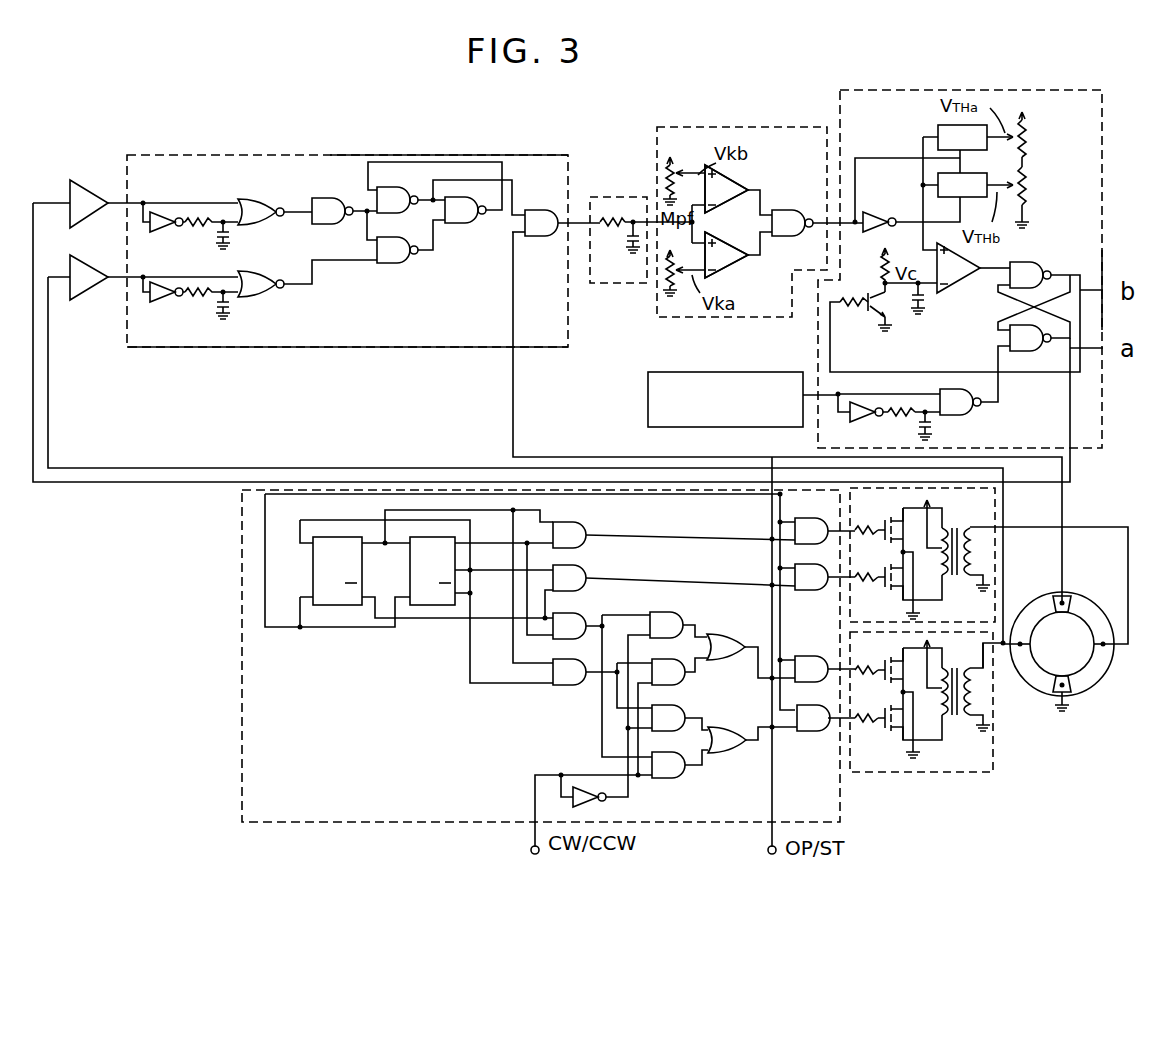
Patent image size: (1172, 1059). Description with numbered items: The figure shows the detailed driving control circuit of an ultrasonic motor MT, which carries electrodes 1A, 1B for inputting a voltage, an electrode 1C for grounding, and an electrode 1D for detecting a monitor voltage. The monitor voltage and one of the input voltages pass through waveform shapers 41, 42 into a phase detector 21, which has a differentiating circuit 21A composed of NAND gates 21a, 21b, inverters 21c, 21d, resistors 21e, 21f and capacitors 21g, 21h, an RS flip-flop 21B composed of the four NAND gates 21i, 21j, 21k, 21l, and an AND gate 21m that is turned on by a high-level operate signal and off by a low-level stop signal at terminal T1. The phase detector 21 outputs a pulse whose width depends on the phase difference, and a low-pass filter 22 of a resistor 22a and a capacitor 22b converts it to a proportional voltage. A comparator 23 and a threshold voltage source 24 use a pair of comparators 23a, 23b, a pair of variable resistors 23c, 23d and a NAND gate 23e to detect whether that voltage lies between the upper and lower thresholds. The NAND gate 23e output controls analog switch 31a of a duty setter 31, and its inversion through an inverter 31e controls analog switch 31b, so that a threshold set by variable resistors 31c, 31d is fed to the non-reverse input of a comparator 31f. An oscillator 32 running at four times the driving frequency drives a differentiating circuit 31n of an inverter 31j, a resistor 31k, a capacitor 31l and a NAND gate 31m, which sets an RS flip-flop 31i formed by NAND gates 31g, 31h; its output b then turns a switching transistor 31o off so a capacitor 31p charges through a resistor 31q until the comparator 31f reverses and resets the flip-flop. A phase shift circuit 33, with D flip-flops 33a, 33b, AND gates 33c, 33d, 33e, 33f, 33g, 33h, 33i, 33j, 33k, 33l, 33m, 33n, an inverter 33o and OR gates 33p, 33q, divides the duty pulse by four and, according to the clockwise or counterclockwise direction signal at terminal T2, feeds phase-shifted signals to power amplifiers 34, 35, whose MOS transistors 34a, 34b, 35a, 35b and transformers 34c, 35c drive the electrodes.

The waveform shaper 41 is at (97, 180).
The waveform shaper 42 is at (88, 301).
The phase detector 21 is at (187, 154).
The differentiating circuit 21A is at (203, 348).
The RS flip-flop 21B is at (408, 156).
The NAND gate 21a is at (245, 199).
The NAND gate 21b is at (290, 292).
The inverter 21c is at (138, 228).
The inverter 21d is at (160, 304).
The resistor 21e is at (198, 225).
The resistor 21f is at (198, 296).
The capacitor 21g is at (234, 236).
The capacitor 21h is at (232, 311).
The NAND gate 21i is at (330, 198).
The NAND gate 21j is at (387, 187).
The NAND gate 21k is at (392, 263).
The NAND gate 21l is at (460, 223).
The AND gate 21m is at (543, 236).
The low-pass filter 22 is at (613, 153).
The resistor 22a is at (610, 217).
The capacitor 22b is at (628, 243).
The comparator 23 is at (790, 105).
The threshold voltage source 24 is at (726, 221).
The comparator 23a is at (740, 177).
The comparator 23b is at (732, 267).
The variable resistor 23c is at (655, 158).
The variable resistor 23d is at (668, 273).
The NAND gate 23e is at (788, 208).
The duty setter 31 is at (852, 85).
The analog switch 31a is at (943, 125).
The analog switch 31b is at (954, 171).
The variable resistor 31c is at (1028, 133).
The variable resistor 31d is at (1028, 177).
The inverter 31e is at (878, 210).
The comparator 31f is at (963, 280).
The NAND gate 31g is at (1035, 262).
The NAND gate 31h is at (1010, 338).
The RS flip-flop 31i is at (1102, 268).
The inverter 31j is at (857, 417).
The resistor 31k is at (900, 416).
The capacitor 31l is at (935, 427).
The NAND gate 31m is at (982, 408).
The differentiating circuit 31n is at (866, 384).
The switching transistor 31o is at (872, 317).
The capacitor 31p is at (917, 313).
The resistor 31q is at (883, 259).
The oscillator 32 is at (648, 408).
The phase shift circuit 33 is at (242, 770).
The D flip-flop 33a is at (310, 585).
The D flip-flop 33b is at (405, 585).
The AND gate 33c is at (568, 526).
The AND gate 33d is at (583, 565).
The AND gate 33e is at (576, 622).
The AND gate 33f is at (562, 686).
The AND gate 33g is at (680, 595).
The AND gate 33h is at (684, 680).
The AND gate 33i is at (690, 709).
The AND gate 33j is at (680, 780).
The AND gate 33k is at (824, 520).
The AND gate 33l is at (824, 588).
The AND gate 33m is at (823, 658).
The AND gate 33n is at (817, 732).
The inverter 33o is at (593, 803).
The OR gate 33p is at (720, 628).
The OR gate 33q is at (714, 755).
The power amplifier 34 is at (1030, 496).
The MOS transistor 34a is at (882, 525).
The MOS transistor 34b is at (883, 590).
The transformer 34c is at (960, 585).
The power amplifier 35 is at (880, 775).
The MOS transistor 35a is at (882, 665).
The MOS transistor 35b is at (883, 740).
The transformer 35c is at (958, 735).
The electrode 1A is at (1040, 610).
The electrode 1B is at (1100, 668).
The electrode 1C is at (1057, 692).
The electrode 1D is at (1067, 600).
The ultrasonic motor MT is at (1102, 706).
The terminal T1 is at (772, 868).
The terminal T2 is at (536, 868).